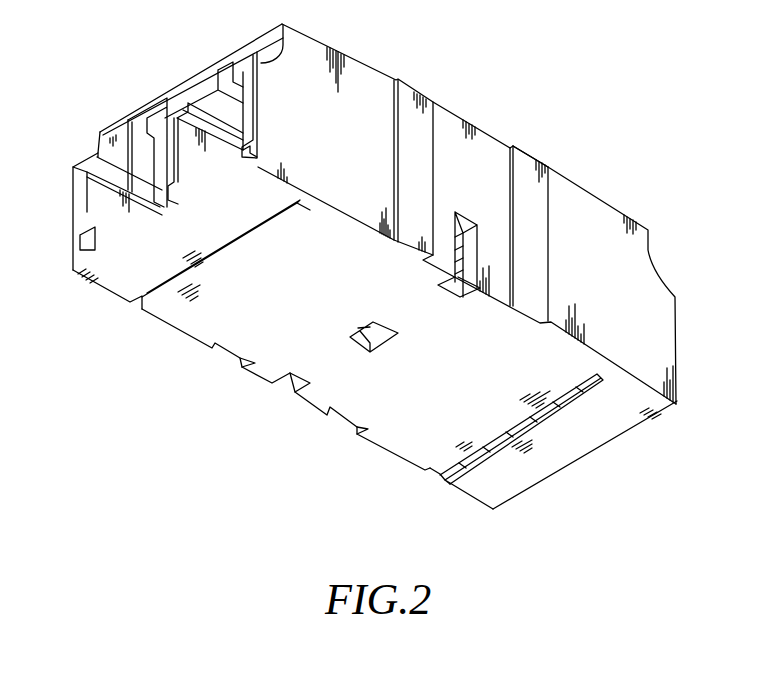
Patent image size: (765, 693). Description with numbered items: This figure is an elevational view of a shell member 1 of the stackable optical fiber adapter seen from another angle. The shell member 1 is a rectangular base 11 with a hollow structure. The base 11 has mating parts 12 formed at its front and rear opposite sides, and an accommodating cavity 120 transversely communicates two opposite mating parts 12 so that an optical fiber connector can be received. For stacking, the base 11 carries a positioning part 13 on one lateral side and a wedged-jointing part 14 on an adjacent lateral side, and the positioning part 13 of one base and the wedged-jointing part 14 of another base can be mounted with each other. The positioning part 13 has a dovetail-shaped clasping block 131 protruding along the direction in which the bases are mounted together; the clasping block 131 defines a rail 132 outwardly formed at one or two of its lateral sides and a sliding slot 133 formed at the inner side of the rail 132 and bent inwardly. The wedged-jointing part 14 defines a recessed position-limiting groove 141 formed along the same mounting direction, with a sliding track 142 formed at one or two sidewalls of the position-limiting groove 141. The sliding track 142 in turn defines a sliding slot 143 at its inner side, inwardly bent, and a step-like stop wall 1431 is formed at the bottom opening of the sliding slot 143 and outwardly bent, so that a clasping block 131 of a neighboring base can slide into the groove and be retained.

The shell member 1 is at (346, 281).
The base 11 is at (590, 207).
The mating part 12 is at (149, 147).
The accommodating cavity 120 is at (95, 216).
The positioning part 13 is at (543, 200).
The clasping block 131 is at (535, 170).
The rail 132 is at (513, 148).
The sliding slot 133 is at (507, 160).
The wedged-jointing part 14 is at (368, 369).
The position-limiting groove 141 is at (155, 296).
The sliding track 142 is at (445, 481).
The sliding slot 143 is at (558, 456).
The stop wall 1431 is at (603, 382).